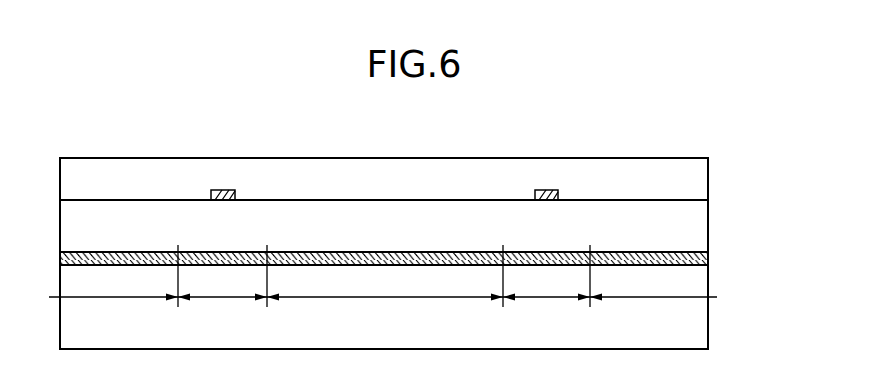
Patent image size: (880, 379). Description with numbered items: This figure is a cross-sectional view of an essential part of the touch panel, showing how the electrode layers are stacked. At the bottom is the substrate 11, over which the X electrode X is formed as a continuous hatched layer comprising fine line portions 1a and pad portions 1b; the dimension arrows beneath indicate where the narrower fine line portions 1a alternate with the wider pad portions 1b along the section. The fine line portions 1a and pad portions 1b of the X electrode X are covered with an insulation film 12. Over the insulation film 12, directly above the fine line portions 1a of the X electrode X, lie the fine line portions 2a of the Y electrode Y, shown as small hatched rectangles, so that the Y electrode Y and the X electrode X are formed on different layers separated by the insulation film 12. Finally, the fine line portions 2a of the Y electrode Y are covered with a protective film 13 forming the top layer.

The substrate 11 is at (694, 323).
The insulation film 12 is at (692, 229).
The protective film 13 is at (694, 179).
The X electrode X is at (690, 257).
The Y electrode Y is at (399, 154).
The fine line portion 2a is at (548, 190).
The fine line portion 1a is at (384, 286).
The pad portion 1b is at (383, 311).